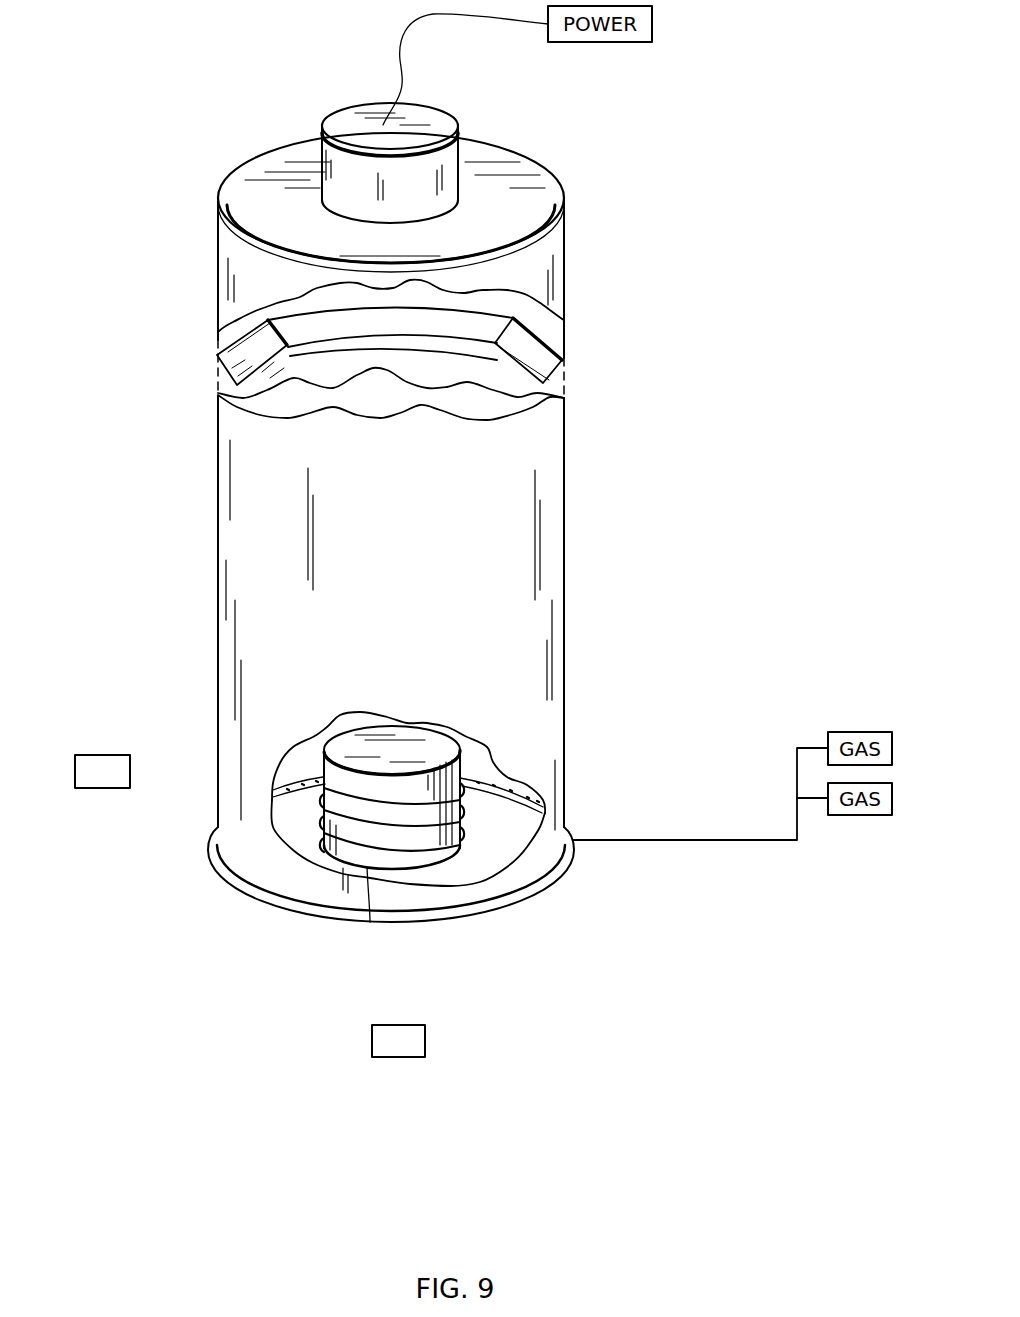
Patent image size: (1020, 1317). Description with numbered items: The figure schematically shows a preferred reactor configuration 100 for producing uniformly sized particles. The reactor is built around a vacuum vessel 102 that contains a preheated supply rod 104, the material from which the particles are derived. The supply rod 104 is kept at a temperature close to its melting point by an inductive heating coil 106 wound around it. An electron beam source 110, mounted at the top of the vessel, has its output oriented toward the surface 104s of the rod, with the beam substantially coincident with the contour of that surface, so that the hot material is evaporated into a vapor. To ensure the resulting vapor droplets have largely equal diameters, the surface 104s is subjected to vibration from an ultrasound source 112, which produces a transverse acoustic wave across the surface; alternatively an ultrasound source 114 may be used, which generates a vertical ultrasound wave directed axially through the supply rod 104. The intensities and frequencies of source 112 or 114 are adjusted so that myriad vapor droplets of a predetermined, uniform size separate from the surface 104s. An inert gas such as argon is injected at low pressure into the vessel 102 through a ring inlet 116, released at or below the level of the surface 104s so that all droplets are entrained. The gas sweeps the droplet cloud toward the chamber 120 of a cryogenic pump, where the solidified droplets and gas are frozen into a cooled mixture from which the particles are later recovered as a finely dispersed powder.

The reactor configuration 100 is at (132, 527).
The vacuum vessel 102 is at (550, 722).
The supply rod 104 is at (407, 857).
The surface of supply rod 104s is at (405, 745).
The inductive heating coil 106 is at (316, 835).
The electron beam source 110 is at (437, 163).
The ultrasound source 112 is at (218, 745).
The ultrasound source 114 is at (372, 1042).
The ring inlet 116 is at (562, 873).
The cryogenic pump chamber 120 is at (548, 350).